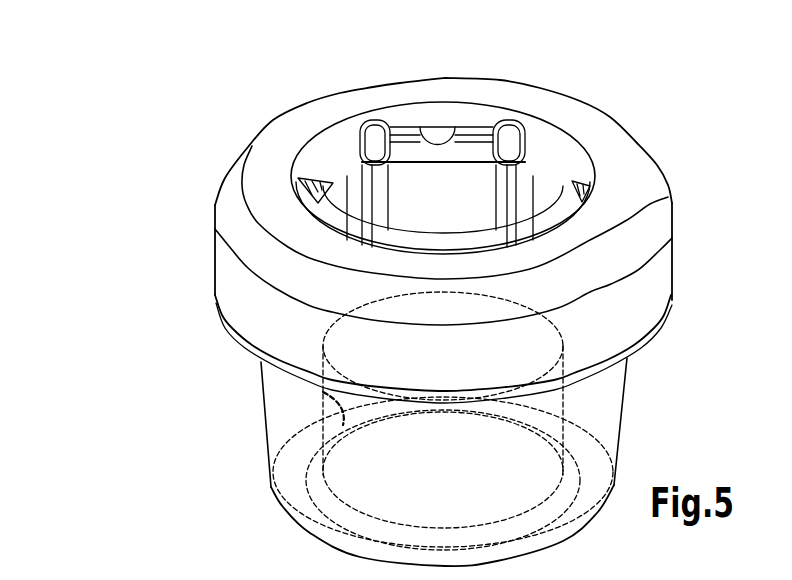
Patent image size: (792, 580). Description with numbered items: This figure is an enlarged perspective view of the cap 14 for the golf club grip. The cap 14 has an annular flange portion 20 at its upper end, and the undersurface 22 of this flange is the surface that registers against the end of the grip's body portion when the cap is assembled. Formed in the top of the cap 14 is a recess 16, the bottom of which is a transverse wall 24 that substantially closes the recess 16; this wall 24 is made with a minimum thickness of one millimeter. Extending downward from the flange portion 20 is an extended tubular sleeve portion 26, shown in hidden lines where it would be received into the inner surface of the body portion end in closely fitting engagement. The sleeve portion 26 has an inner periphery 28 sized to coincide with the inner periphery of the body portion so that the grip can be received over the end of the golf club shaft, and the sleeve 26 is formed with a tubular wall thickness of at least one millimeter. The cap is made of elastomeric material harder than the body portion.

The cap 14 is at (272, 84).
The recess 16 is at (430, 132).
The annular flange portion 20 is at (672, 258).
The undersurface 22 is at (226, 328).
The transverse wall 24 is at (302, 181).
The extended tubular sleeve portion 26 is at (622, 410).
The inner periphery 28 is at (283, 450).